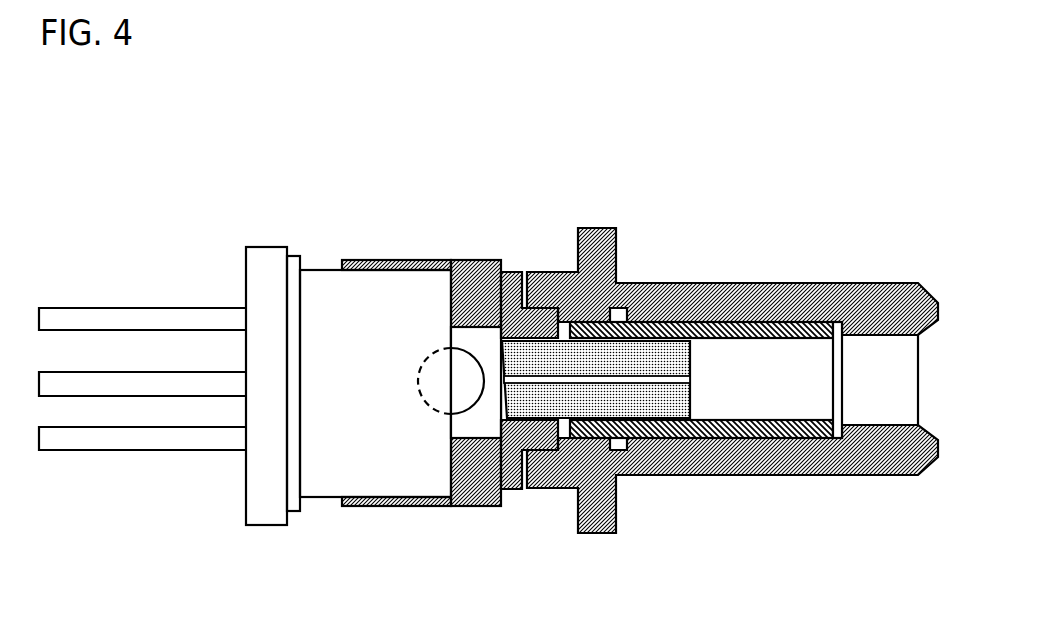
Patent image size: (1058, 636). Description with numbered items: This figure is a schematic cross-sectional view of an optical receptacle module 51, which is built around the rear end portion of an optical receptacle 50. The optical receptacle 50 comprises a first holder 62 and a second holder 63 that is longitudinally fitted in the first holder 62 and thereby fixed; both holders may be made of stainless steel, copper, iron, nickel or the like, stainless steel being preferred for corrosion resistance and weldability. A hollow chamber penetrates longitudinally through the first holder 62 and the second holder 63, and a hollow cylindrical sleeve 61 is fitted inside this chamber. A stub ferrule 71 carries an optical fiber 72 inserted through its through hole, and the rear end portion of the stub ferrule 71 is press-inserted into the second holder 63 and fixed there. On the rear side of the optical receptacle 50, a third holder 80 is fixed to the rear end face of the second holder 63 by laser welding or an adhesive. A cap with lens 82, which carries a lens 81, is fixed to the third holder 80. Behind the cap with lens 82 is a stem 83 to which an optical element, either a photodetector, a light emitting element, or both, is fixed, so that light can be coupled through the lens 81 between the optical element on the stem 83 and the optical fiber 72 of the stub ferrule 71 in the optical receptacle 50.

The optical receptacle 50 is at (782, 263).
The optical receptacle module 51 is at (262, 222).
The sleeve 61 is at (812, 443).
The first holder 62 is at (662, 287).
The second holder 63 is at (507, 272).
The stub ferrule 71 is at (653, 410).
The optical fiber 72 is at (685, 377).
The third holder 80 is at (462, 265).
The lens 81 is at (462, 402).
The cap with lens 82 is at (351, 478).
The stem 83 is at (262, 513).